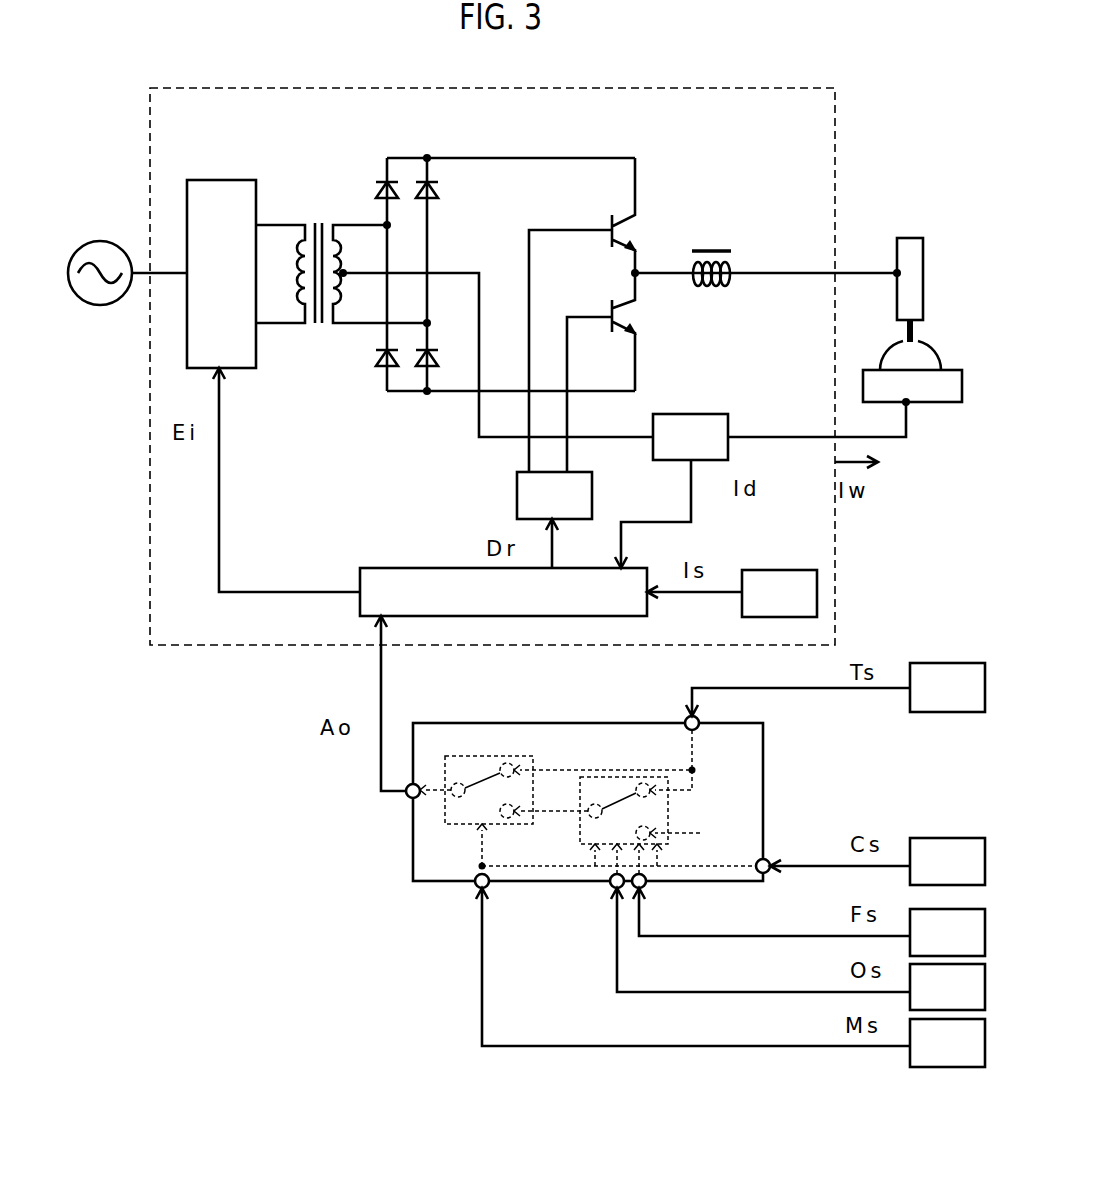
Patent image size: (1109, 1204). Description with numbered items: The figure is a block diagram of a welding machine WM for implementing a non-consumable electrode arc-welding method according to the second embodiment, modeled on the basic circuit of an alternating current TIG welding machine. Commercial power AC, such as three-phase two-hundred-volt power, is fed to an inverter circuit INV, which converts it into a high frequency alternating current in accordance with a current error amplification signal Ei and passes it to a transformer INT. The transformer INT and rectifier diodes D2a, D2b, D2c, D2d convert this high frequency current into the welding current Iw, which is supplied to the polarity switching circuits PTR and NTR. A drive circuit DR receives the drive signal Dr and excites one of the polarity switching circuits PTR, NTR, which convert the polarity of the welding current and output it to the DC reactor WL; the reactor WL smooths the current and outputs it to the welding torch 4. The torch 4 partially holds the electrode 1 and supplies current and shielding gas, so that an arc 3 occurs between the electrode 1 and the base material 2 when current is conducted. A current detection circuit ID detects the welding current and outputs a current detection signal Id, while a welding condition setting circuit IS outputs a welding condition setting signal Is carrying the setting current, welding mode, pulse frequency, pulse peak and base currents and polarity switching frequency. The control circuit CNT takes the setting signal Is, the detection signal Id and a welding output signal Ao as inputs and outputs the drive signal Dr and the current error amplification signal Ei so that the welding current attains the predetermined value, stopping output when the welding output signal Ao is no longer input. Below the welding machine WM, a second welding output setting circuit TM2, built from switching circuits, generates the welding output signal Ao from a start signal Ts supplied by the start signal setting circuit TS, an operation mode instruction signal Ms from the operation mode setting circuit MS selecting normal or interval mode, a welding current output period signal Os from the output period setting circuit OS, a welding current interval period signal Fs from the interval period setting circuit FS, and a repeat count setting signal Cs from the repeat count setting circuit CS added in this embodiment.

The electrode 1 is at (915, 338).
The base material 2 is at (942, 405).
The arc 3 is at (885, 355).
The welding torch 4 is at (897, 250).
The welding machine WM is at (840, 92).
The commercial power AC is at (96, 243).
The inverter circuit INV is at (226, 180).
The transformer INT is at (313, 222).
The rectifier diode D2a is at (372, 192).
The rectifier diode D2b is at (430, 185).
The rectifier diode D2c is at (424, 370).
The rectifier diode D2d is at (377, 362).
The polarity switching circuit PTR is at (583, 315).
The polarity switching circuit NTR is at (584, 372).
The DC reactor WL is at (766, 251).
The current detection circuit ID is at (690, 437).
The drive circuit DR is at (554, 495).
The control circuit CNT is at (503, 592).
The welding condition setting circuit IS is at (779, 593).
The second welding output setting circuit TM2 is at (405, 853).
The start signal setting circuit TS is at (947, 687).
The repeat count setting circuit CS is at (947, 861).
The welding current interval period setting circuit FS is at (947, 932).
The welding current output period setting circuit OS is at (947, 987).
The operation mode setting circuit MS is at (947, 1043).